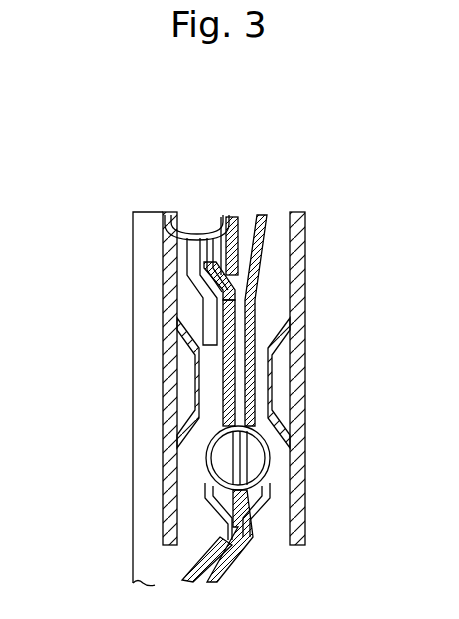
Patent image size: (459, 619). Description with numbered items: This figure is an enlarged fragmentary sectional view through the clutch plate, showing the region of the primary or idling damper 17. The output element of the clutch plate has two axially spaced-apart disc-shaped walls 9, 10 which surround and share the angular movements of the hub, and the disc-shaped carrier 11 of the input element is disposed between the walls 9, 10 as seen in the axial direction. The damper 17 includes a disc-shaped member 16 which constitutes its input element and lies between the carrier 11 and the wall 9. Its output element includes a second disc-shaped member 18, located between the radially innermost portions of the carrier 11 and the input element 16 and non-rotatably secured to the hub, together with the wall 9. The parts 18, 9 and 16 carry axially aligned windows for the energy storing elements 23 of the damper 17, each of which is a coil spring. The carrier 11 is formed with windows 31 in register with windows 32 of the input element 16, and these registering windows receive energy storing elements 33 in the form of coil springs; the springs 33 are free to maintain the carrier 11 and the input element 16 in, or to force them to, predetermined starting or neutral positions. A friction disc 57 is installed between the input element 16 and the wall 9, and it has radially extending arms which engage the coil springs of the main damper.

The primary damper 17 is at (172, 178).
The disc-shaped wall 9 is at (163, 538).
The disc-shaped wall 10 is at (305, 540).
The carrier 11 is at (253, 291).
The energy storing element 23 is at (192, 221).
The friction disc 57 is at (188, 270).
The disc-shaped member 18 is at (237, 243).
The disc-shaped member 16 is at (230, 382).
The window 31 is at (262, 451).
The window 32 is at (225, 470).
The energy storing element 33 is at (258, 470).